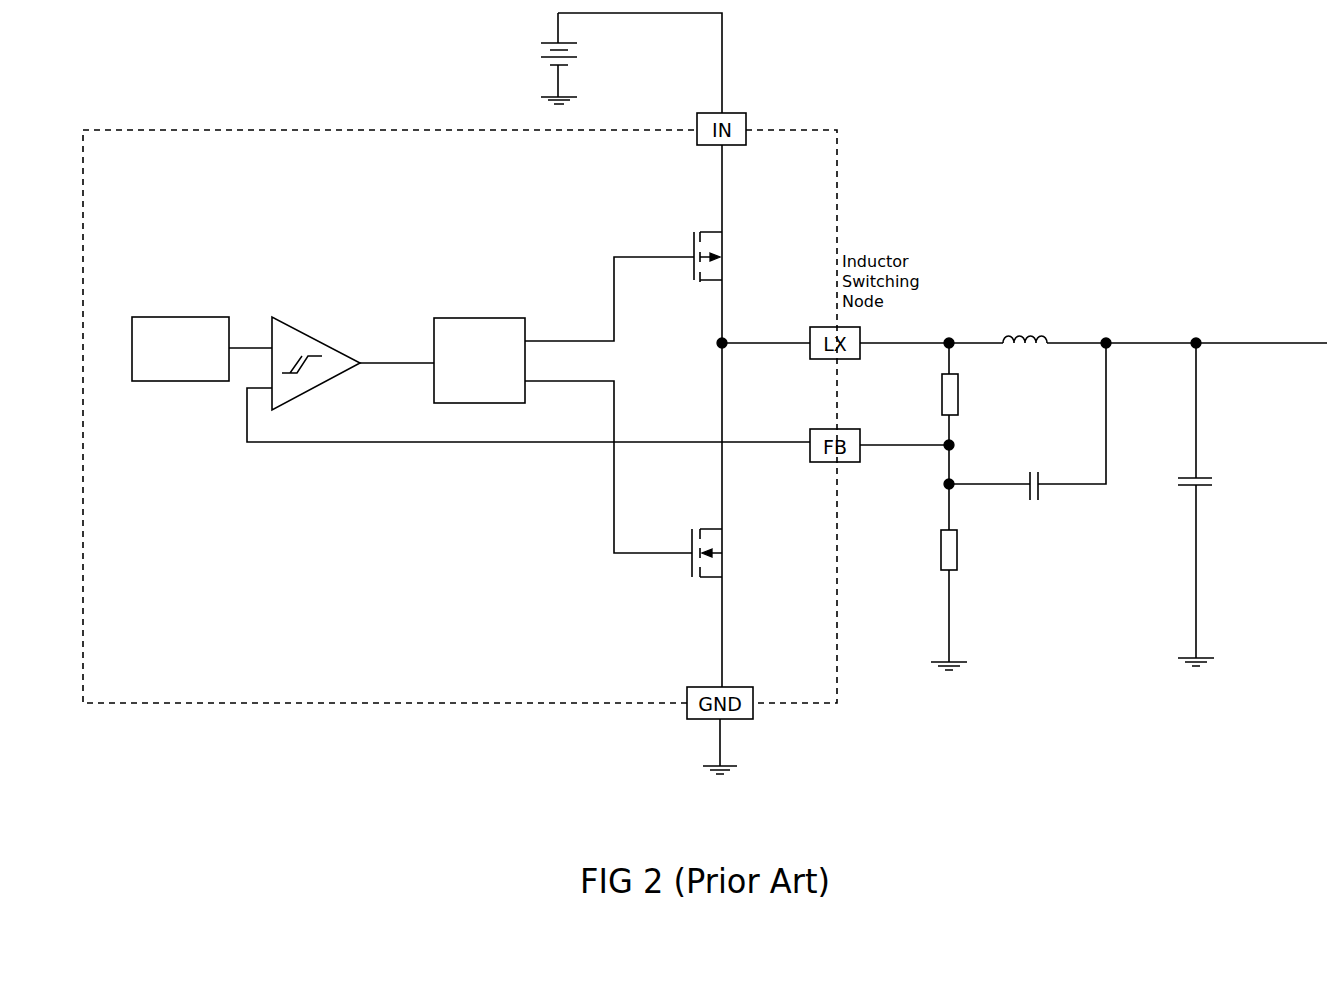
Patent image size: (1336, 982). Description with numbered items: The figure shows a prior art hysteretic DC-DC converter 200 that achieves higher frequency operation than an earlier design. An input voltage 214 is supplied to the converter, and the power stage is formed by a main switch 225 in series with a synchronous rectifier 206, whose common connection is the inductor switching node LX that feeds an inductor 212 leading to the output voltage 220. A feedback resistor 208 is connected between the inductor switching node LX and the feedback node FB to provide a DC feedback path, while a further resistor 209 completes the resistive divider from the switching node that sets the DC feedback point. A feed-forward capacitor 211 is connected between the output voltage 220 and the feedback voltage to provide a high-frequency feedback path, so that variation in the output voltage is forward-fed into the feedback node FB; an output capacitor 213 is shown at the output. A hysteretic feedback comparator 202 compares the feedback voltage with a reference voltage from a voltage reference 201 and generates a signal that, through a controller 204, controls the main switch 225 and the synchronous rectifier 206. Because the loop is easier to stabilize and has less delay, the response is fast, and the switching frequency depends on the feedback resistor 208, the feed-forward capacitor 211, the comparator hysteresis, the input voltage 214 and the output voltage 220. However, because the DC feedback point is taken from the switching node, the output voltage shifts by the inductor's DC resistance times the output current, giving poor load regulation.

The DC-DC converter IC 200 is at (460, 416).
The voltage reference 201 is at (202, 338).
The hysteretic feedback comparator 202 is at (528, 379).
The controller 204 is at (563, 405).
The synchronous rectifier 206 is at (769, 605).
The feedback resistor 208 is at (929, 396).
The feedback resistor 209 is at (933, 557).
The feed-forward capacitor 211 is at (1027, 430).
The inductor 212 is at (1032, 361).
The output capacitor 213 is at (1218, 504).
The input voltage 214 is at (603, 63).
The output voltage 220 is at (1093, 340).
The main switch 225 is at (744, 285).